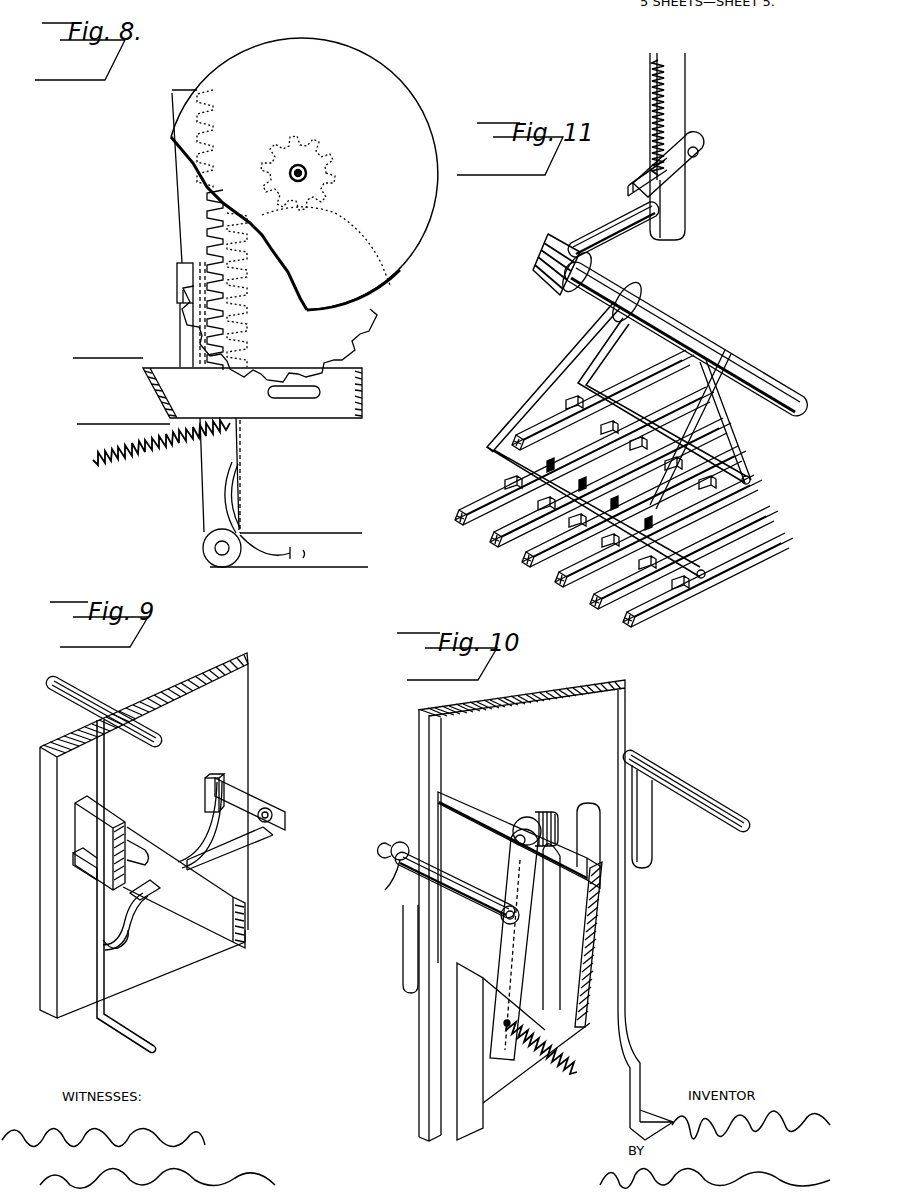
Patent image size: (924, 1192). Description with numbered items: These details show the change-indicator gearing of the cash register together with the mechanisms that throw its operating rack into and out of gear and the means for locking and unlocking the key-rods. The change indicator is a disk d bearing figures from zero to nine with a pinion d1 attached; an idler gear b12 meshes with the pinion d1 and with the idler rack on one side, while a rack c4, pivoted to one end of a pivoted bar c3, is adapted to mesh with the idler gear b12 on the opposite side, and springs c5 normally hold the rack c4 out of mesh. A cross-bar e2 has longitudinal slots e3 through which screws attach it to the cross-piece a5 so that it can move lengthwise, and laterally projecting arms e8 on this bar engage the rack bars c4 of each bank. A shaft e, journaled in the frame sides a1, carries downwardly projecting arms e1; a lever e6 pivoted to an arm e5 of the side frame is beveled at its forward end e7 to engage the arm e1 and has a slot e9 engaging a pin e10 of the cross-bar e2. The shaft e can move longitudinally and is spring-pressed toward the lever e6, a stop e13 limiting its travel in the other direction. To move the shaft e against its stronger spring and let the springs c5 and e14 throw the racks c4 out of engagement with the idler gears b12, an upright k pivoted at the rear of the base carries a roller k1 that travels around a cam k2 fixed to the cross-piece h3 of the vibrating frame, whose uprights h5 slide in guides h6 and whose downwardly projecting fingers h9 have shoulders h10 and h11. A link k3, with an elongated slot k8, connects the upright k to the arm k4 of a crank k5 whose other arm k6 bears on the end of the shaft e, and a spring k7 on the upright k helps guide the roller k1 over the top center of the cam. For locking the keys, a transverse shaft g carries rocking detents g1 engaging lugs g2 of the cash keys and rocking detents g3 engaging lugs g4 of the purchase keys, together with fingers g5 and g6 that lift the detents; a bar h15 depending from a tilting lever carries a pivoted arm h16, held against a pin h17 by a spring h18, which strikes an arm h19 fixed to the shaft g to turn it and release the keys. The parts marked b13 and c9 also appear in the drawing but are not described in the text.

In FIG. 8, the indicator disk d is at (435, 200).
In FIG. 8, the pinion d1 is at (318, 170).
In FIG. 8, the rack c4 is at (192, 235).
In FIG. 8, the laterally projecting arm e8 is at (166, 315).
In FIG. 9, the laterally projecting arm e8 is at (205, 805).
In FIG. 8, the idler gear b12 is at (279, 331).
In FIG. 8, the cross-bar e2 is at (217, 391).
In FIG. 9, the cross-bar e2 is at (184, 887).
In FIG. 8, the longitudinal slot e3 is at (316, 398).
In FIG. 9, the longitudinal slot e3 is at (140, 848).
In FIG. 8, the spring e14 is at (157, 453).
In FIG. 8, the spring c5 is at (240, 502).
In FIG. 8, the pivoted bar c3 is at (320, 543).
In FIG. 11, the downwardly projecting bar h15 is at (678, 87).
In FIG. 11, the spring h18 is at (652, 132).
In FIG. 11, the pin h17 is at (673, 147).
In FIG. 11, the arm h16 is at (673, 173).
In FIG. 11, the arm h19 is at (617, 222).
In FIG. 11, the transverse shaft g is at (718, 350).
In FIG. 11, the rocking detent g1 is at (488, 445).
In FIG. 11, the lug or stop g2 is at (507, 482).
In FIG. 11, the laterally projecting finger g5 is at (712, 416).
In FIG. 11, the laterally projecting finger g6 is at (735, 400).
In FIG. 11, the rocking detent g3 is at (752, 487).
In FIG. 11, the lug or stop g4 is at (707, 487).
In FIG. 11, the bars b13 is at (550, 585).
In FIG. 11, the brackets c9 is at (575, 458).
In FIG. 9, the side of the frame a1 is at (240, 705).
In FIG. 10, the side of the frame a1 is at (618, 710).
In FIG. 9, the shaft e is at (95, 692).
In FIG. 10, the shaft e is at (690, 795).
In FIG. 9, the downwardly projecting arm e1 is at (105, 790).
In FIG. 9, the cross-piece a5 is at (118, 808).
In FIG. 9, the stop e13 is at (76, 874).
In FIG. 9, the arm of the side frame e5 is at (248, 805).
In FIG. 9, the lever e6 is at (265, 855).
In FIG. 9, the slot e9 is at (140, 920).
In FIG. 9, the pin e10 is at (150, 898).
In FIG. 9, the beveled forward end e7 is at (100, 930).
In FIG. 10, the guide h6 is at (443, 760).
In FIG. 10, the cross-piece h3 is at (485, 807).
In FIG. 10, the roller k1 is at (545, 812).
In FIG. 10, the arm of the crank k6 is at (652, 830).
In FIG. 10, the arm of the crank k4 is at (385, 858).
In FIG. 10, the link k3 is at (478, 862).
In FIG. 10, the elongated slot k8 is at (378, 888).
In FIG. 10, the crank k5 is at (403, 935).
In FIG. 10, the upright k is at (505, 942).
In FIG. 10, the cam k2 is at (555, 930).
In FIG. 10, the downwardly-projecting finger h9 is at (617, 950).
In FIG. 10, the upright of the vibrating frame h5 is at (470, 1051).
In FIG. 10, the spring k7 is at (547, 1068).
In FIG. 10, the shoulder h10 is at (640, 1075).
In FIG. 10, the shoulder h11 is at (660, 1120).